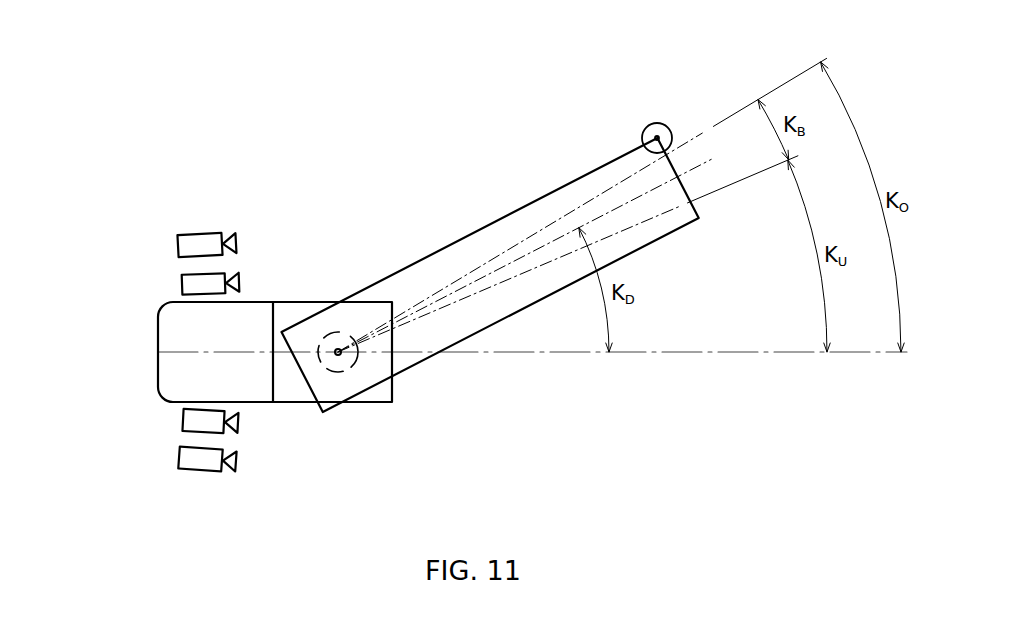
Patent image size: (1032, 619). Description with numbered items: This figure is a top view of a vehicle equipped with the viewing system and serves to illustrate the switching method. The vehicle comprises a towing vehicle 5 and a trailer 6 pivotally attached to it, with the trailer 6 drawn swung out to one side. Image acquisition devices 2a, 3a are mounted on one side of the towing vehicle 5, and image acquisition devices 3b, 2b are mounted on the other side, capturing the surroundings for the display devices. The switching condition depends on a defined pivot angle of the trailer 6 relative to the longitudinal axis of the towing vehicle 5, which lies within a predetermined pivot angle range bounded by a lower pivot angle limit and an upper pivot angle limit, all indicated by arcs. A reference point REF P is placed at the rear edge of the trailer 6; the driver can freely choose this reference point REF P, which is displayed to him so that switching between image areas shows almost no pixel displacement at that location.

The image acquisition device 2a is at (176, 244).
The image acquisition device 2b is at (179, 457).
The image acquisition device 3a is at (181, 282).
The image acquisition device 3b is at (184, 420).
The towing vehicle 5 is at (176, 367).
The trailer 6 is at (446, 266).
The reference point REF P is at (790, 53).